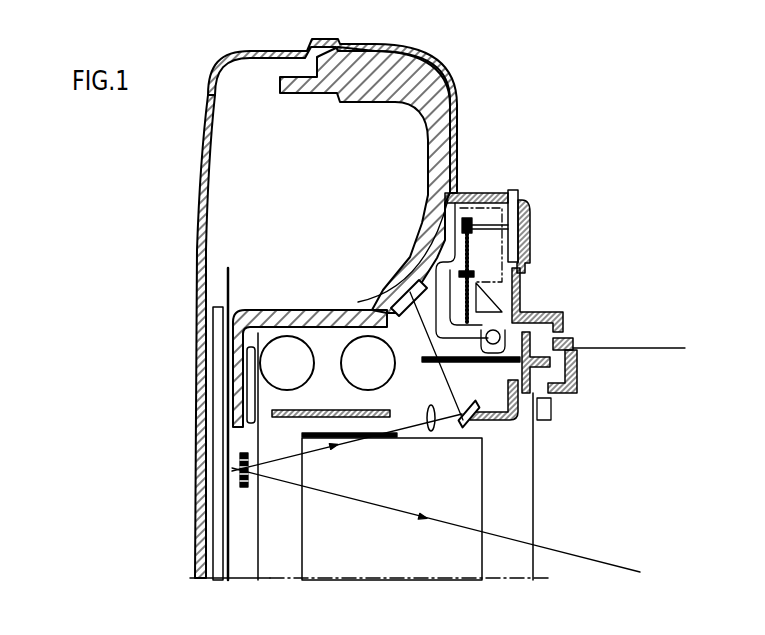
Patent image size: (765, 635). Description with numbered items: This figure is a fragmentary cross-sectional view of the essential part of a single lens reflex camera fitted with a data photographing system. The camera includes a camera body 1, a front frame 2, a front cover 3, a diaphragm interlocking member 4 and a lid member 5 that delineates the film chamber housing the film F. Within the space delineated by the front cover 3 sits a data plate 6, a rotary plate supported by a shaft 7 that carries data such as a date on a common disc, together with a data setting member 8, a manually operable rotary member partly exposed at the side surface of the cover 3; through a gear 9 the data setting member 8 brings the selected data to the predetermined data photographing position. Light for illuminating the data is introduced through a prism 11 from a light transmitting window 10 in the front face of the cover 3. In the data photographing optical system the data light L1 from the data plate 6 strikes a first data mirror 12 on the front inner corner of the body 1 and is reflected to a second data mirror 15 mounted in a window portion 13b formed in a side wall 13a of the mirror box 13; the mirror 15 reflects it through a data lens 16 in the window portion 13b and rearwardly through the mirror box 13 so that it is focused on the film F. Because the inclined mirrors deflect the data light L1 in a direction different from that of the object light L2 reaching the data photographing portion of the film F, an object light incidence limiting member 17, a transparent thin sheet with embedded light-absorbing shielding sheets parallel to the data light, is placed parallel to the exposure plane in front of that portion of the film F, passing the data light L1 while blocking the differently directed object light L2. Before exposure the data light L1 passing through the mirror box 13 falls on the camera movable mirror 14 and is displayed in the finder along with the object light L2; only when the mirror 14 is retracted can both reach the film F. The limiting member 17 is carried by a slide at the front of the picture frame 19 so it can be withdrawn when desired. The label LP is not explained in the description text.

The camera body 1 is at (440, 120).
The front frame 2 is at (553, 396).
The front cover 3 is at (528, 262).
The diaphragm interlocking member 4 is at (577, 340).
The lid member 5 is at (198, 257).
The data plate 6 is at (462, 242).
The shaft 7 is at (486, 265).
The data setting member 8 is at (516, 217).
The gear 9 is at (468, 218).
The light transmitting window 10 is at (520, 287).
The prism 11 is at (500, 312).
The first data mirror 12 is at (373, 304).
The mirror box 13 is at (387, 413).
The side wall of the mirror box 13a is at (313, 412).
The window portion 13b is at (483, 426).
The camera movable mirror 14 is at (468, 553).
The second data mirror 15 is at (464, 430).
The data lens 16 is at (430, 430).
The object light incidence limiting member 17 is at (243, 455).
The picture frame 19 is at (235, 430).
The film F is at (233, 500).
The data light L1 is at (418, 295).
The object light L2 is at (365, 501).
The light path plate LP is at (471, 375).